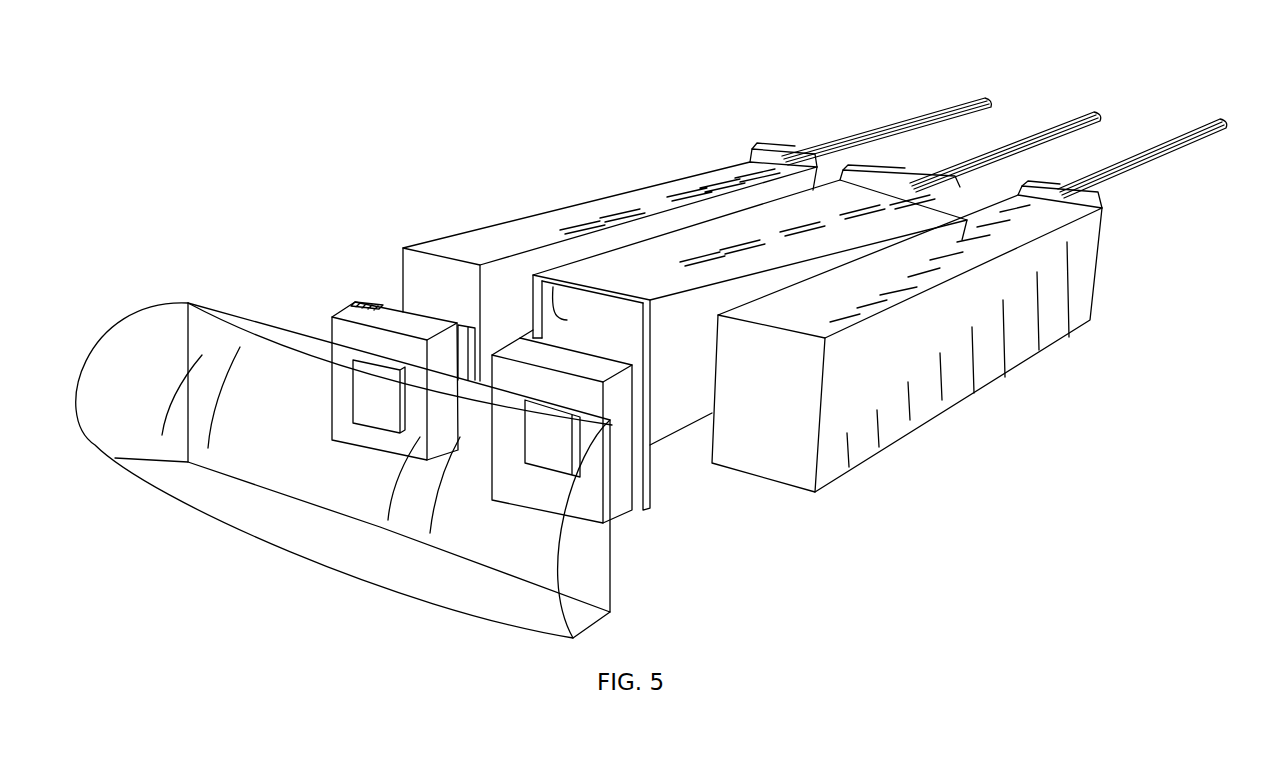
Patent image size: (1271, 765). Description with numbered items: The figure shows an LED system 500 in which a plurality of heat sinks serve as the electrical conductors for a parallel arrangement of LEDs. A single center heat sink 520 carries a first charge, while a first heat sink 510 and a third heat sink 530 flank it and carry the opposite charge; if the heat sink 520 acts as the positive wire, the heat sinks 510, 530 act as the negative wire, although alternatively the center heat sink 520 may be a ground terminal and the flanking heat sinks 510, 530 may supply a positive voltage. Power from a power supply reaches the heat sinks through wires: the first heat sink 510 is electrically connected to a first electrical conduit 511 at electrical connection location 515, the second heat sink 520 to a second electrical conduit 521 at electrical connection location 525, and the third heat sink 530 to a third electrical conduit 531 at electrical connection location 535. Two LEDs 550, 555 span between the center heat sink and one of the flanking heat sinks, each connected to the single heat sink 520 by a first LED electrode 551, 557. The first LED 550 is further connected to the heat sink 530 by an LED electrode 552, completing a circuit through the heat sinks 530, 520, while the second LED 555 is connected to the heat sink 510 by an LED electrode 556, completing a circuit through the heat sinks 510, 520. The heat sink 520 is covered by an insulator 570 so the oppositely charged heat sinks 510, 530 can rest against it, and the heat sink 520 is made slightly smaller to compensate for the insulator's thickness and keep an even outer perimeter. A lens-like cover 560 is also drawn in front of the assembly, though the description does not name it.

The LED system 500 is at (320, 88).
The first heat sink 510 is at (657, 183).
The first electrical conduit 511 is at (903, 120).
The electrical connection location 515 is at (780, 160).
The second heat sink 520 is at (556, 278).
The second electrical conduit 521 is at (1048, 128).
The electrical connection location 525 is at (913, 183).
The third heat sink 530 is at (857, 449).
The third electrical conduit 531 is at (1203, 128).
The electrical connection location 535 is at (1080, 197).
The first LED 550 is at (605, 383).
The first LED electrode 551 is at (518, 340).
The LED electrode 552 is at (645, 492).
The second LED 555 is at (336, 318).
The LED electrode 556 is at (352, 303).
The first LED electrode 557 is at (465, 327).
The lens cover 560 is at (188, 303).
The insulator 570 is at (733, 230).